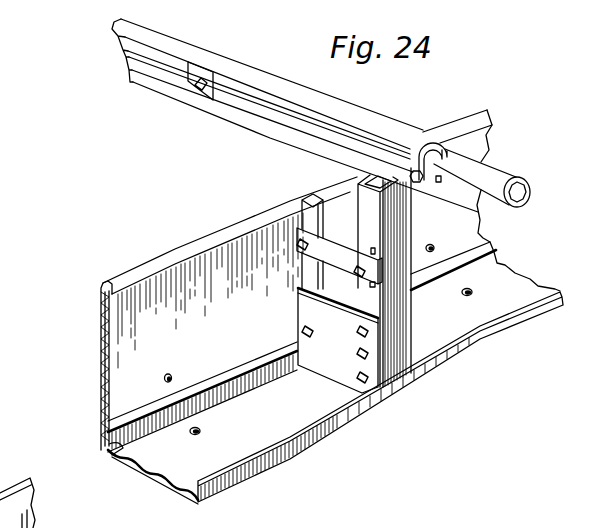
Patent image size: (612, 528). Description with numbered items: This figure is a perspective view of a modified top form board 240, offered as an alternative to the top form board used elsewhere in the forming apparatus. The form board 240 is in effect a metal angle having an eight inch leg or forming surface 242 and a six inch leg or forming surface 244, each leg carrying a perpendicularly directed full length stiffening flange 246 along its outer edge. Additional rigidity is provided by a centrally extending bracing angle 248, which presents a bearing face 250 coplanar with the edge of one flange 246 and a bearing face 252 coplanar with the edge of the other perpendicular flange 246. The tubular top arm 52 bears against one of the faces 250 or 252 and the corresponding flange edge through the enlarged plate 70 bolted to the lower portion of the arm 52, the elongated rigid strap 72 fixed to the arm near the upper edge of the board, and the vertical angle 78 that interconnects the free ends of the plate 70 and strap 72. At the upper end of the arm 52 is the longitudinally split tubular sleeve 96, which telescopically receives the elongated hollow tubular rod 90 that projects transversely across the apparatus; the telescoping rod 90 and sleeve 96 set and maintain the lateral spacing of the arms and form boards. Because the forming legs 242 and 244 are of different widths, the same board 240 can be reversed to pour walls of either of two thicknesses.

The top form board 240 is at (295, 347).
The leg or forming surface 242 is at (124, 318).
The leg or forming surface 244 is at (173, 461).
The stiffening flange 246 is at (230, 242).
The bracing angle 248 is at (103, 453).
The bearing face 250 is at (237, 391).
The bearing face 252 is at (230, 367).
The tubular sleeve 96 is at (367, 122).
The tubular rod 90 is at (498, 173).
The top arm 52 is at (412, 227).
The rigid strap 72 is at (336, 250).
The vertical angle 78 is at (305, 268).
The plate 70 is at (323, 357).